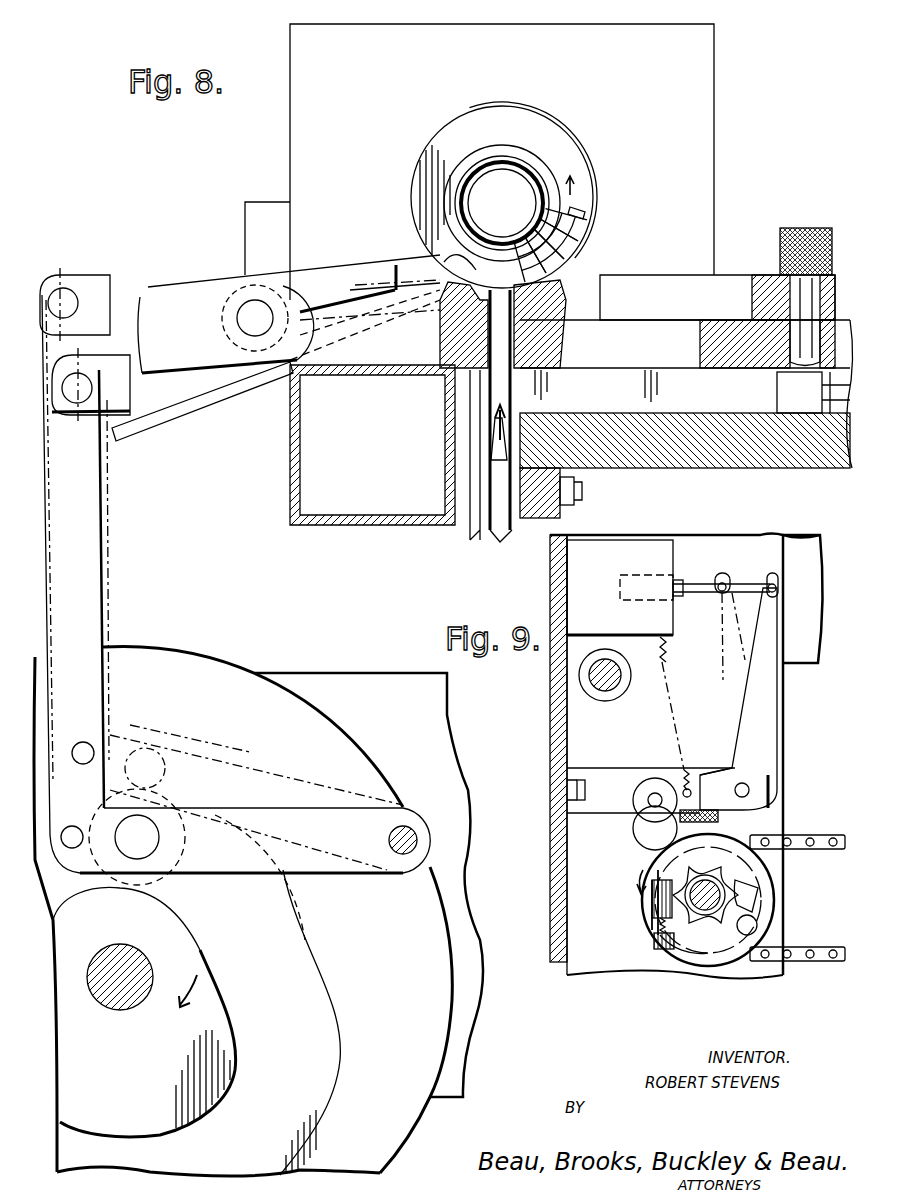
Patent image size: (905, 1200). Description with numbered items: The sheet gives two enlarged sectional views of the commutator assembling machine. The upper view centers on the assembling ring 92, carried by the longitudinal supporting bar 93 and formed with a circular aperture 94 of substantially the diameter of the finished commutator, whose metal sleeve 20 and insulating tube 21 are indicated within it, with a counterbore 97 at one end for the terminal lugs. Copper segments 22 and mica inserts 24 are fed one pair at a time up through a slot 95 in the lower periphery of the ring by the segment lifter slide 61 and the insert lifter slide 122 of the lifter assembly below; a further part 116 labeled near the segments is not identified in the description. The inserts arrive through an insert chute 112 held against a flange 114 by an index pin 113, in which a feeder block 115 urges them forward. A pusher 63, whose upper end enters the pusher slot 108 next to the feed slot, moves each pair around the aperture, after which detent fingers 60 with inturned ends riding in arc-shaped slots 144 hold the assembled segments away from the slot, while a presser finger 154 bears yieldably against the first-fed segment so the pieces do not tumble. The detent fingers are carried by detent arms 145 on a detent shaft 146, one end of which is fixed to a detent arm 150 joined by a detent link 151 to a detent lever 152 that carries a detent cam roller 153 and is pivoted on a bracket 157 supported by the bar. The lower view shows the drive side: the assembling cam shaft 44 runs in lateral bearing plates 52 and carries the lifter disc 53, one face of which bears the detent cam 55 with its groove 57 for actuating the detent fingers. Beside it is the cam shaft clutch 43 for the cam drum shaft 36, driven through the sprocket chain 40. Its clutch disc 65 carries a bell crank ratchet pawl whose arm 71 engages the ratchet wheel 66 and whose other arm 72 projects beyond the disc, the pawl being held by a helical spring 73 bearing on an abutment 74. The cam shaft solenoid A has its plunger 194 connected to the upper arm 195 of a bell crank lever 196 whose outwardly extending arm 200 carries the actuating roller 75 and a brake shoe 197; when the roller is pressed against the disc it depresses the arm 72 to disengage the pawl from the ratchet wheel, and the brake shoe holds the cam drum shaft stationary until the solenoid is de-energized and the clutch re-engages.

In FIG. 8, the assembling ring 92 is at (715, 160).
In FIG. 8, the bracket 157 is at (250, 228).
In FIG. 8, the flange 114 is at (733, 285).
In FIG. 8, the feeder block 115 is at (813, 394).
In FIG. 8, the insert chute 112 is at (683, 427).
In FIG. 8, the index pin 113 is at (803, 228).
In FIG. 8, the slot 95 is at (548, 352).
In FIG. 8, the arc-shaped slots 144 is at (540, 305).
In FIG. 8, the segment lifter slide 61 is at (496, 528).
In FIG. 8, the insert lifter slide 122 is at (514, 528).
In FIG. 8, the supporting bar 93 is at (309, 453).
In FIG. 8, the circular aperture 94 is at (573, 157).
In FIG. 8, the counterbore 97 is at (558, 133).
In FIG. 8, the metal sleeve 20 is at (488, 168).
In FIG. 8, the insulating tube 21 is at (513, 160).
In FIG. 8, the detent fingers 60 is at (518, 244).
In FIG. 8, the presser finger 154 is at (583, 213).
In FIG. 8, the mica inserts 24 is at (580, 231).
In FIG. 8, the copper commutator segments 22 is at (578, 239).
In FIG. 8, the tooth 116 is at (578, 292).
In FIG. 8, the pusher slot 108 is at (481, 302).
In FIG. 8, the detent arms 145 is at (376, 257).
In FIG. 8, the detent shaft 146 is at (240, 322).
In FIG. 8, the detent arm 150 is at (193, 370).
In FIG. 8, the pusher 63 is at (276, 390).
In FIG. 9, the detent link 151 is at (86, 623).
In FIG. 9, the detent lever 152 is at (372, 873).
In FIG. 9, the detent cam roller 153 is at (163, 874).
In FIG. 9, the lateral bearing plates 52 is at (343, 686).
In FIG. 9, the lifter disc 53 is at (432, 1114).
In FIG. 9, the detent cam 55 is at (325, 1066).
In FIG. 9, the assembling cam shaft 44 is at (138, 973).
In FIG. 9, the groove 57 is at (323, 1017).
In FIG. 9, the cam shaft solenoid A is at (628, 548).
In FIG. 9, the plunger 194 is at (742, 585).
In FIG. 9, the upper arm 195 is at (756, 686).
In FIG. 9, the bell crank lever 196 is at (727, 758).
In FIG. 9, the arm 200 is at (683, 789).
In FIG. 9, the actuating roller 75 is at (650, 790).
In FIG. 9, the brake shoe 197 is at (719, 820).
In FIG. 9, the disc 65 is at (668, 851).
In FIG. 9, the cam drum shaft 36 is at (718, 920).
In FIG. 9, the ratchet wheel 66 is at (740, 886).
In FIG. 9, the arm 71 is at (735, 897).
In FIG. 9, the abutment 74 is at (652, 901).
In FIG. 9, the helical spring 73 is at (658, 923).
In FIG. 9, the ratchet clutch 43 is at (658, 941).
In FIG. 9, the arm 72 is at (672, 957).
In FIG. 9, the sprocket chain 40 is at (810, 830).